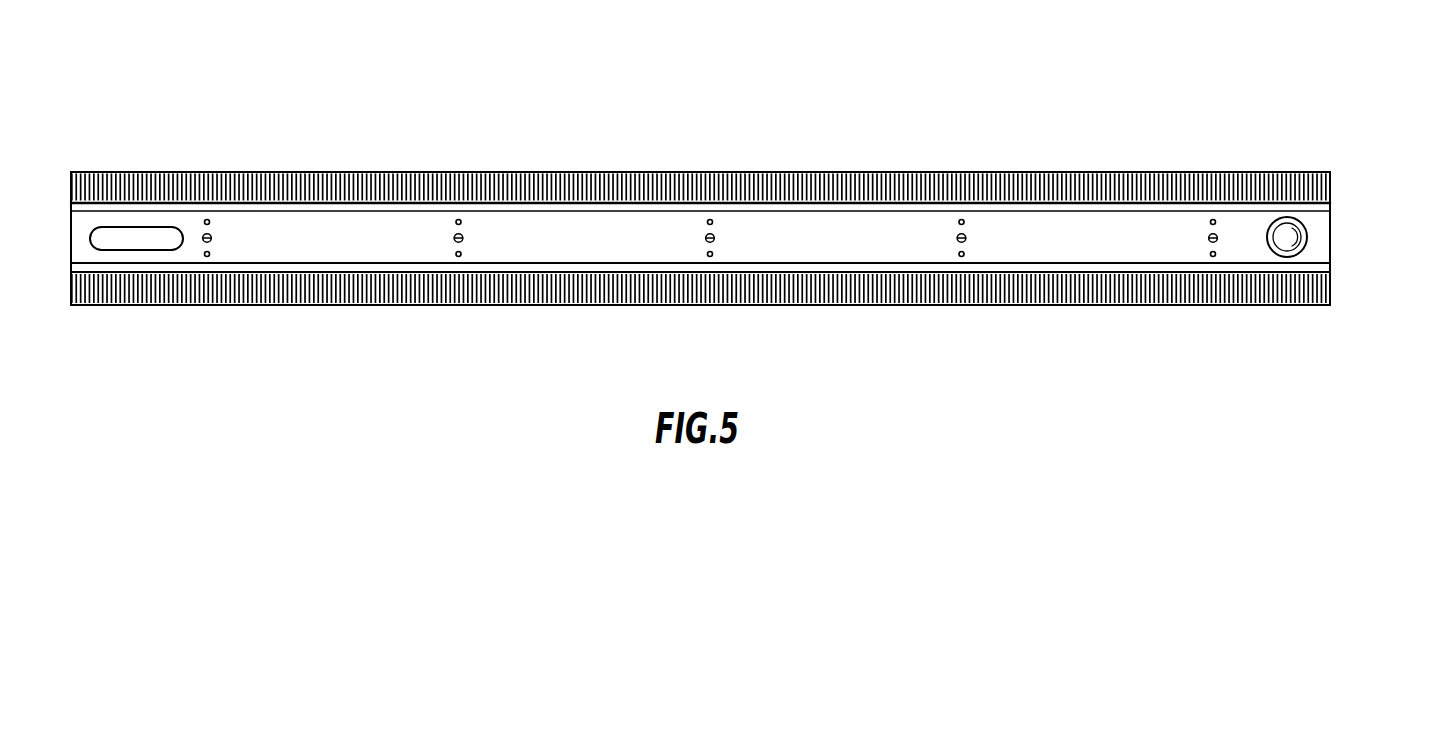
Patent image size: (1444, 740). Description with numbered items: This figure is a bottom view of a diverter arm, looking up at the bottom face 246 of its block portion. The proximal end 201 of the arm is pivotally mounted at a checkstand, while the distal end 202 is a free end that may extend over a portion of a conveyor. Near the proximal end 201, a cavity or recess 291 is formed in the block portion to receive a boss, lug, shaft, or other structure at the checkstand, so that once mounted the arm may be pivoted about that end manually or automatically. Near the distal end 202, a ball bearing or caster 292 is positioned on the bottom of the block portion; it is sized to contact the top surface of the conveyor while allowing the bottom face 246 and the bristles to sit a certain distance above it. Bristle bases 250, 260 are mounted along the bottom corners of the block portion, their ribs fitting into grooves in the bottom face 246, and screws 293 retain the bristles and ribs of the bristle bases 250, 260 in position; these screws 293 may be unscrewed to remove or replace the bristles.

The proximal end 201 is at (71, 247).
The distal end 202 is at (1331, 248).
The bottom face 246 is at (805, 235).
The bristle base 250 is at (1330, 208).
The bristle base 260 is at (1330, 270).
The cavity or recess 291 is at (128, 232).
The ball bearing or caster 292 is at (1275, 232).
The screws 293 is at (213, 237).